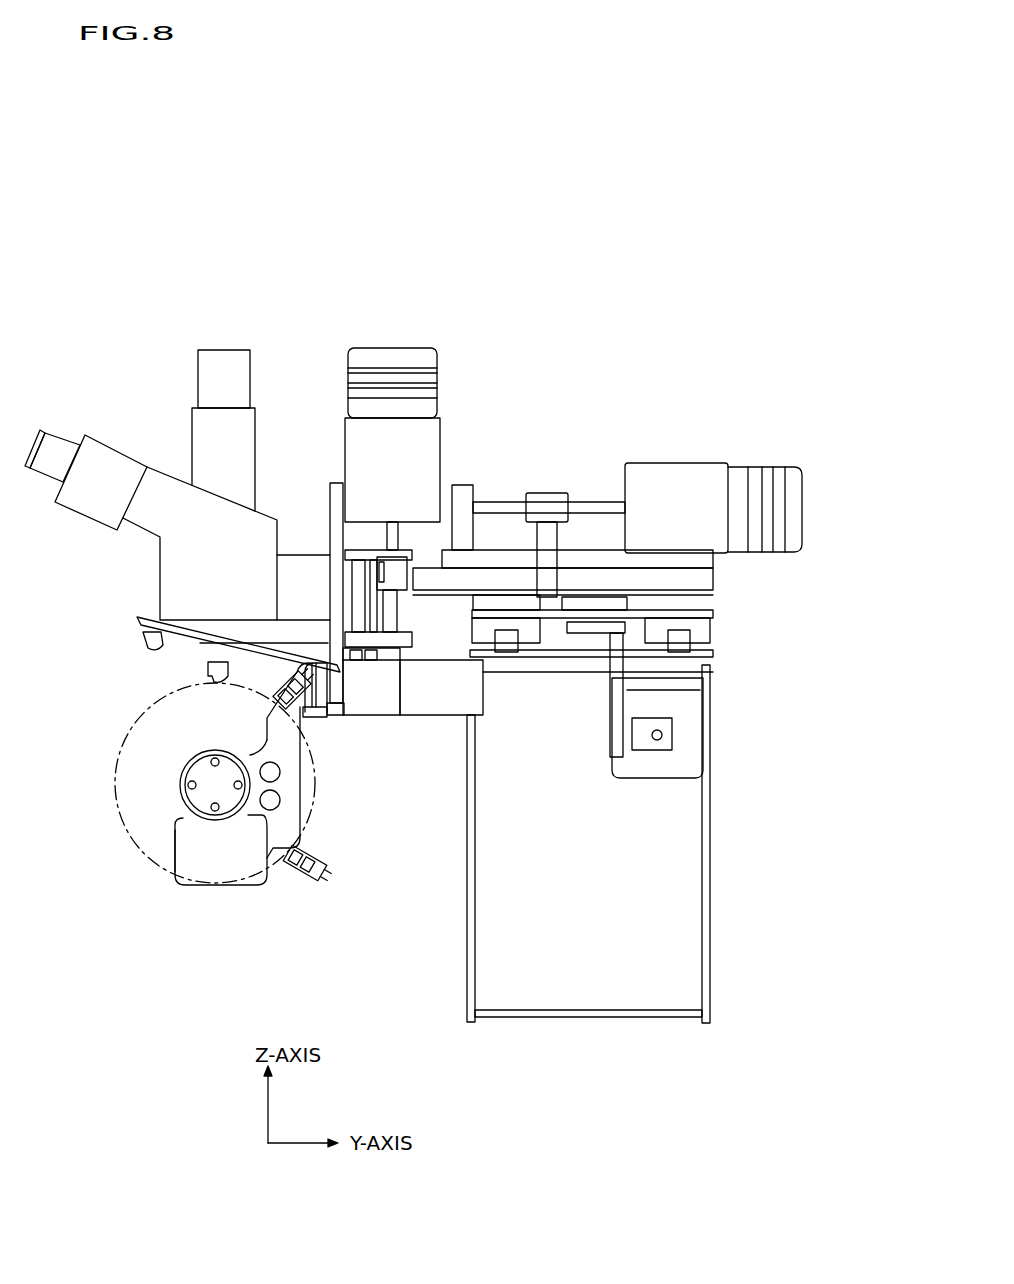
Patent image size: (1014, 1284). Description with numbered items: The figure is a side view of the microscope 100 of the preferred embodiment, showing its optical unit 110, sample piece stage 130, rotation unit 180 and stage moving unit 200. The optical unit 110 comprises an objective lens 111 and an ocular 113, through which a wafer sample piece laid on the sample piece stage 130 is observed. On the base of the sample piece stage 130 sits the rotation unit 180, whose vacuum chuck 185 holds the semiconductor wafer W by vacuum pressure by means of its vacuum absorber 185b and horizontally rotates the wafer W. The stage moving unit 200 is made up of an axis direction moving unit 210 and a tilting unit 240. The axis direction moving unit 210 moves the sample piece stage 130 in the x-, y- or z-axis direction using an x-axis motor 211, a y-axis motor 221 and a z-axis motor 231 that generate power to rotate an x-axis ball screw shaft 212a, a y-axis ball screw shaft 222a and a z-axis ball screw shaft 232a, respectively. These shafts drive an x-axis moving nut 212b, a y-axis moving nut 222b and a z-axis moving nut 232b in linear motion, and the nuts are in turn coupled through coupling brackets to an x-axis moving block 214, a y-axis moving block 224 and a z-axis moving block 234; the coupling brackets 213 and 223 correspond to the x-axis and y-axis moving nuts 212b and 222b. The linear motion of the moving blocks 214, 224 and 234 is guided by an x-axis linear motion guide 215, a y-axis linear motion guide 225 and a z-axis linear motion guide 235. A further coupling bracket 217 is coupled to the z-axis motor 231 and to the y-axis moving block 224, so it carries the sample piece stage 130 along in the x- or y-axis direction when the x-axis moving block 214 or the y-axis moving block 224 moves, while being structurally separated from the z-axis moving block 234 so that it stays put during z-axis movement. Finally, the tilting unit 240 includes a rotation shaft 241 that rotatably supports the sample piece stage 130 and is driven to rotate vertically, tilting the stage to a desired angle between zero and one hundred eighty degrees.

The microscope 100 is at (191, 246).
The optical unit 110 is at (122, 426).
The ocular 113 is at (60, 440).
The objective lens 111 is at (140, 637).
The semiconductor wafer W is at (130, 722).
The rotation unit 180 is at (212, 846).
The vacuum chuck 185 is at (170, 840).
The vacuum absorber 185b is at (186, 770).
The sample piece stage 130 is at (290, 852).
The tilting unit 240 is at (321, 729).
The coupling bracket 217 is at (337, 484).
The stage moving unit 200 is at (738, 282).
The axis direction moving unit 210 is at (569, 368).
The z-axis motor 231 is at (393, 350).
The z-axis ball screw shaft 232a is at (390, 612).
The z-axis moving nut 232b is at (390, 568).
The z-axis linear motion guide 235 is at (354, 662).
The z-axis moving block 234 is at (372, 660).
The rotation shaft 241 is at (448, 706).
The coupling bracket 223 is at (542, 540).
The y-axis ball screw shaft 222a is at (604, 508).
The y-axis moving nut 222b is at (557, 494).
The y-axis motor 221 is at (738, 468).
The y-axis moving block 224 is at (612, 603).
The y-axis linear motion guide 225 is at (690, 607).
The x-axis moving block 214 is at (707, 628).
The x-axis linear motion guide 215 is at (690, 641).
The x-axis motor 211 is at (695, 760).
The x-axis ball screw shaft 212a is at (661, 735).
The x-axis moving nut 212b is at (666, 705).
The coupling bracket 213 is at (626, 758).